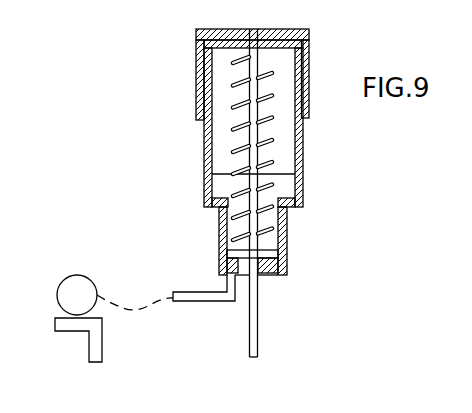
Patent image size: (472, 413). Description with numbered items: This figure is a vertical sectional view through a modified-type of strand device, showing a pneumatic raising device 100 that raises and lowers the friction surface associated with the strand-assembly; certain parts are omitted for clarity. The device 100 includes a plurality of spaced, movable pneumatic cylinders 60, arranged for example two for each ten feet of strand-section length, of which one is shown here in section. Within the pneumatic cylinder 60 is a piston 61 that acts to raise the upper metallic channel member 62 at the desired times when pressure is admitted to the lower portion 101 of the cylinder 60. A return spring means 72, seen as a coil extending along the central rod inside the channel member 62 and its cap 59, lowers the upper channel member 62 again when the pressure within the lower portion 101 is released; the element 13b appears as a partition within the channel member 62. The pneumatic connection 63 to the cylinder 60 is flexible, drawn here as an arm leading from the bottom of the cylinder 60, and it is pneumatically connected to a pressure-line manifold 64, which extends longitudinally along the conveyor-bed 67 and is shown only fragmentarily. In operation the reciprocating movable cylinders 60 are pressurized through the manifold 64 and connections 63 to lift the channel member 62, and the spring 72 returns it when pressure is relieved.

The pneumatic raising device 100 is at (173, 106).
The cap 59 is at (295, 30).
The upper metallic channel member 62 is at (309, 50).
The piston partition 13b is at (303, 188).
The return spring means 72 is at (275, 142).
The pneumatic cylinder 60 is at (287, 237).
The piston 61 is at (228, 253).
The lower portion of the pneumatic cylinder 101 is at (287, 267).
The pneumatic connection 63 is at (190, 301).
The pressure-line manifold 64 is at (57, 294).
The conveyor-bed 67 is at (58, 332).